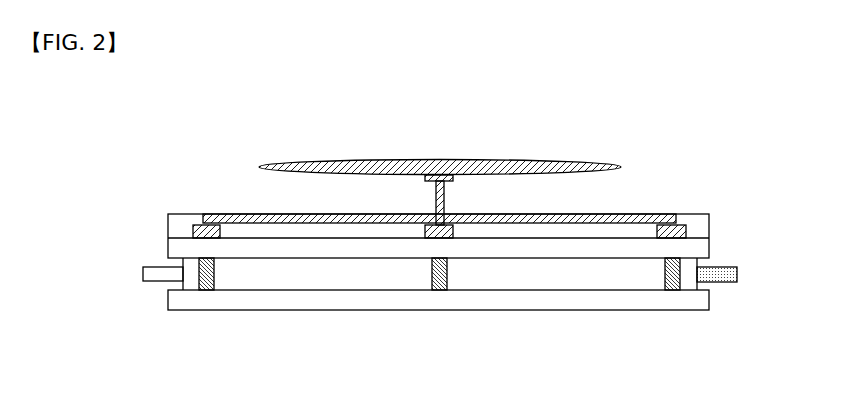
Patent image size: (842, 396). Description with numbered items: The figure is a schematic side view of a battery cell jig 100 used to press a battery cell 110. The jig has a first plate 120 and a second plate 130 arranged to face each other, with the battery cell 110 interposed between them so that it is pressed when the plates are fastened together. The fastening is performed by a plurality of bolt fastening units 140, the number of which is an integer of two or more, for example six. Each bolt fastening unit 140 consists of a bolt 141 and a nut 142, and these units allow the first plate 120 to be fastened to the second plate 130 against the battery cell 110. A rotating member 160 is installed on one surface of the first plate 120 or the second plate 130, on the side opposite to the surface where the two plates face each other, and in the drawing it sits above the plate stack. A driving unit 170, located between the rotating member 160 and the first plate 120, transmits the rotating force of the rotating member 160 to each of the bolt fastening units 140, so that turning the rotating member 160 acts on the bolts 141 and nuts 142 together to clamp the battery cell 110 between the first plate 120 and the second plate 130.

The battery cell jig 100 is at (185, 127).
The battery cell 110 is at (737, 274).
The first plate 120 is at (710, 245).
The second plate 130 is at (710, 298).
The bolt fastening unit 140 is at (391, 294).
The bolt 141 is at (190, 284).
The nut 142 is at (193, 230).
The rotating member 160 is at (618, 165).
The driving unit 170 is at (655, 214).